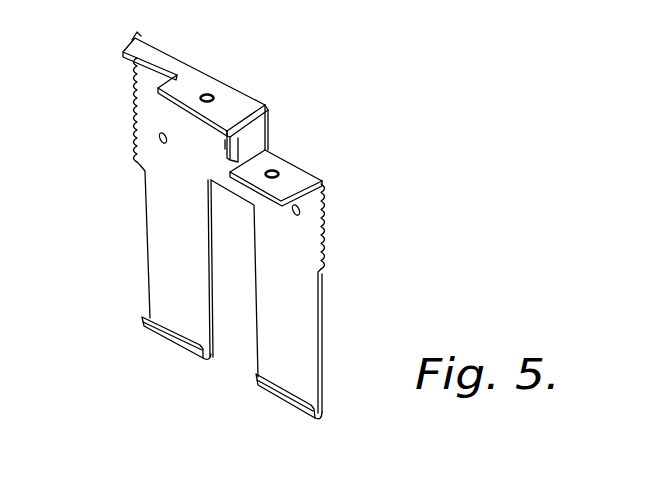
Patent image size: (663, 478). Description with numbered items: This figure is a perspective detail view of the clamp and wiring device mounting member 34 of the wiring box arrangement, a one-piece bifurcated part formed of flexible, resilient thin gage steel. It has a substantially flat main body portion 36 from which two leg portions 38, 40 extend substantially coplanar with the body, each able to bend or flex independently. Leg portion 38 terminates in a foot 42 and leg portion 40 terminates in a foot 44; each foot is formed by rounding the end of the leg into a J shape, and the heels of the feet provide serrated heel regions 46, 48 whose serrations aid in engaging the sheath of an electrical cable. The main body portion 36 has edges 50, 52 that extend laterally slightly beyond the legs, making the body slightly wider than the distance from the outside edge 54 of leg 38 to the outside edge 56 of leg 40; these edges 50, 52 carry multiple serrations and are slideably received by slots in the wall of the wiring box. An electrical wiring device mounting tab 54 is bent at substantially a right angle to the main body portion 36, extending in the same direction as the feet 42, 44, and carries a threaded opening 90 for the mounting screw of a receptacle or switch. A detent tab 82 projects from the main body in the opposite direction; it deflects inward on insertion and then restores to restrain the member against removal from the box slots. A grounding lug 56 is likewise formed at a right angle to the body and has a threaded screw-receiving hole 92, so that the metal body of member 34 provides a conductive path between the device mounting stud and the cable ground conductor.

The clamp member 34 is at (134, 262).
The main body portion 36 is at (196, 176).
The leg portion 38 is at (167, 251).
The leg portion 40 is at (277, 301).
The foot 42 is at (164, 322).
The foot 44 is at (301, 402).
The serrated heel region 46 is at (213, 355).
The serrated heel region 48 is at (320, 415).
The edge 50 is at (137, 115).
The edge 52 is at (330, 214).
The wiring device mounting tab 54 is at (185, 90).
The grounding lug 56 is at (264, 162).
The detent tab 82 is at (229, 144).
The threaded opening 90 is at (209, 95).
The threaded screw-receiving hole 92 is at (279, 173).